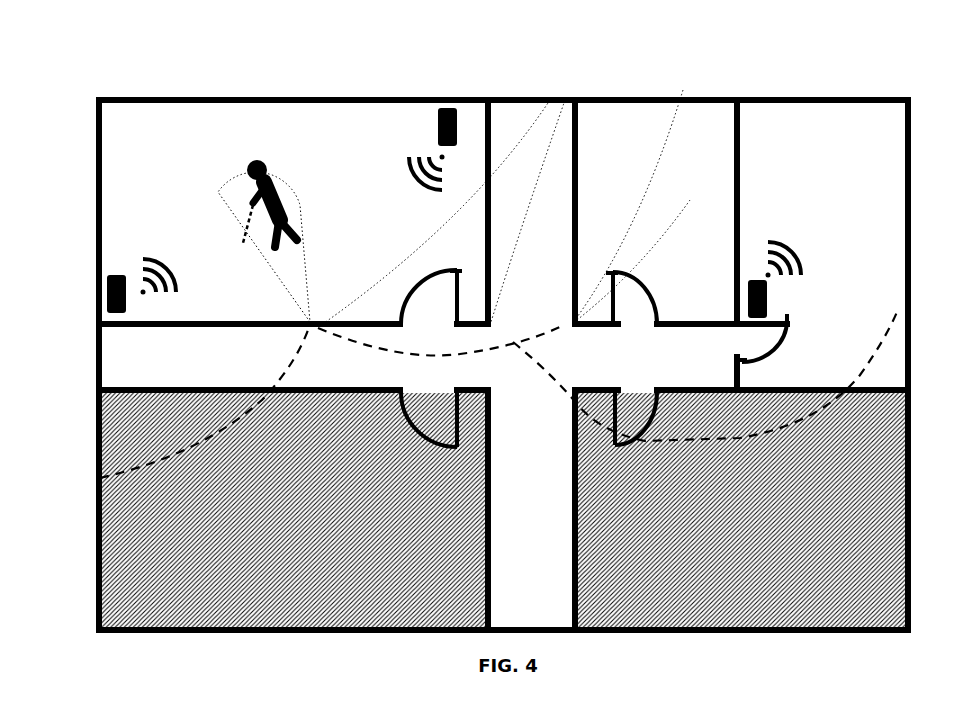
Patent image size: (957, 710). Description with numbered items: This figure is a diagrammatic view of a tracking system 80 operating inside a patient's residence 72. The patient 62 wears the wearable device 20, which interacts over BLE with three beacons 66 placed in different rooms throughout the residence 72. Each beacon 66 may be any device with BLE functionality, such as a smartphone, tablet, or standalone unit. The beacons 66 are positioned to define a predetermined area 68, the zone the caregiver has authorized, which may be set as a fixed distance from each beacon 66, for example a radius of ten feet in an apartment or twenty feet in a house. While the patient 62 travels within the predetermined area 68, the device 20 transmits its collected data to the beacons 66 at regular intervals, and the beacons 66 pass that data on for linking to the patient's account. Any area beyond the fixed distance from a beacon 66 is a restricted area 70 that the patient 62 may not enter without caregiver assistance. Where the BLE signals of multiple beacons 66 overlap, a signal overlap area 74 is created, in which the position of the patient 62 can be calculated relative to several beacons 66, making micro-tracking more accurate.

The wearable device 20 is at (253, 200).
The patient 62 is at (283, 170).
The beacon 66 is at (446, 118).
The predetermined area 68 is at (466, 352).
The restricted area 70 is at (322, 580).
The residence 72 is at (250, 150).
The signal overlap area 74 is at (683, 90).
The tracking system 80 is at (469, 76).